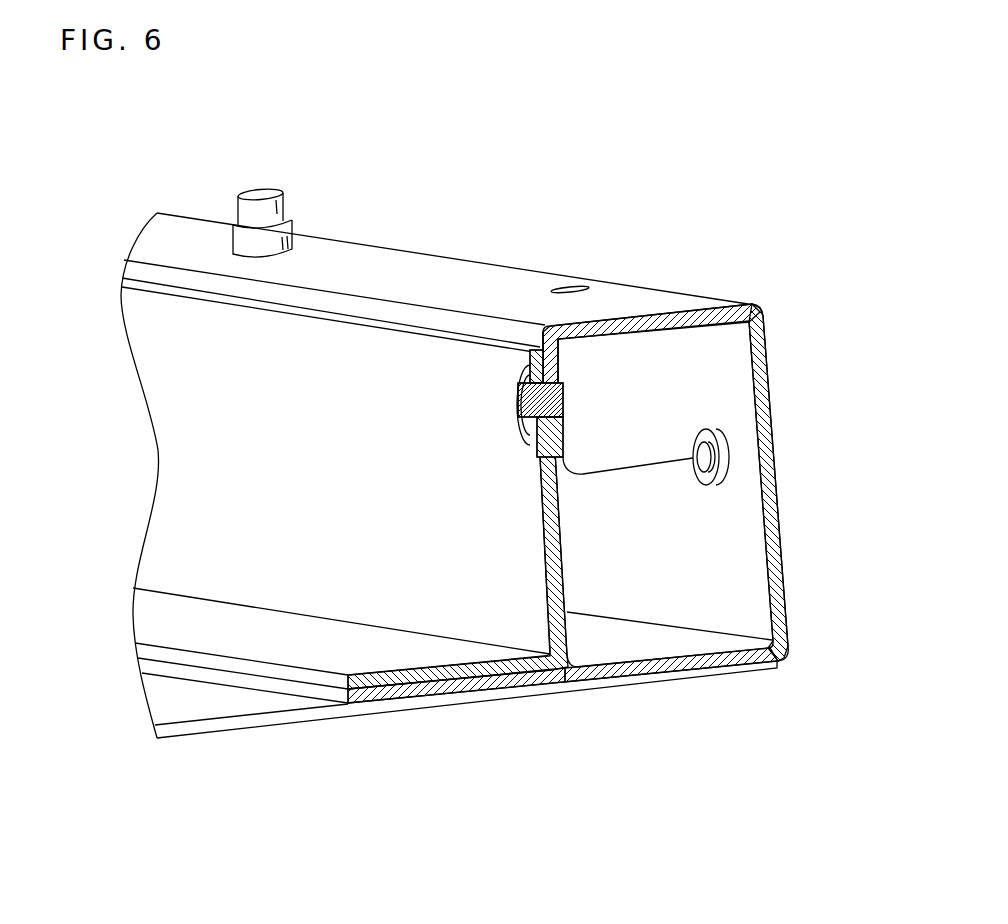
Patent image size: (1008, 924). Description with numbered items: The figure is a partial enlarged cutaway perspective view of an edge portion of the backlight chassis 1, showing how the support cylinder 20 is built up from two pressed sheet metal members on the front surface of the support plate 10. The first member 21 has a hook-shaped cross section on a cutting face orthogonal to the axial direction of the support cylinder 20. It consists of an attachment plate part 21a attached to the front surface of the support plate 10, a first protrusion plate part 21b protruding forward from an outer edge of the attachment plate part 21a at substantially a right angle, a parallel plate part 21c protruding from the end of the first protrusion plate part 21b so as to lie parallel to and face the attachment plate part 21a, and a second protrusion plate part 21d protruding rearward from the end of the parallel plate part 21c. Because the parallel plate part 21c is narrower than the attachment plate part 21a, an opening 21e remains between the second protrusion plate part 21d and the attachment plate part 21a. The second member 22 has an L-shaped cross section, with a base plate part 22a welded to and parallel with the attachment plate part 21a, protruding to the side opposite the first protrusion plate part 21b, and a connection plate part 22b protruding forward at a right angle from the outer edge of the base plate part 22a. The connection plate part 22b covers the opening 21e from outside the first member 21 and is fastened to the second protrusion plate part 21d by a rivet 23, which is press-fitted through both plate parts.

The backlight chassis 1 is at (647, 159).
The support plate 10 is at (542, 692).
The support cylinder 20 is at (365, 231).
The first member 21 is at (750, 290).
The attachment plate part 21a is at (702, 658).
The first protrusion plate part 21b is at (768, 345).
The parallel plate part 21c is at (692, 318).
The second protrusion plate part 21d is at (558, 360).
The opening 21e is at (725, 452).
The second member 22 is at (196, 433).
The base plate part 22a is at (407, 677).
The connection plate part 22b is at (560, 588).
The rivet 23 is at (527, 357).